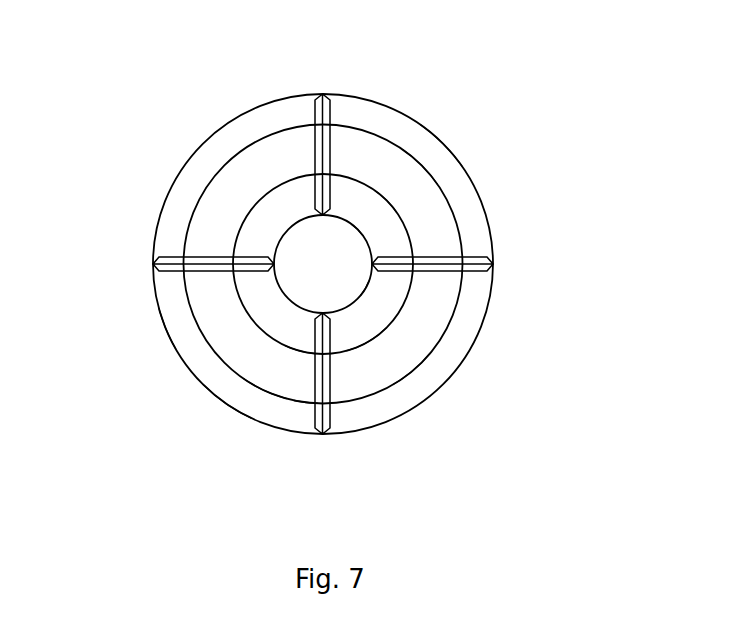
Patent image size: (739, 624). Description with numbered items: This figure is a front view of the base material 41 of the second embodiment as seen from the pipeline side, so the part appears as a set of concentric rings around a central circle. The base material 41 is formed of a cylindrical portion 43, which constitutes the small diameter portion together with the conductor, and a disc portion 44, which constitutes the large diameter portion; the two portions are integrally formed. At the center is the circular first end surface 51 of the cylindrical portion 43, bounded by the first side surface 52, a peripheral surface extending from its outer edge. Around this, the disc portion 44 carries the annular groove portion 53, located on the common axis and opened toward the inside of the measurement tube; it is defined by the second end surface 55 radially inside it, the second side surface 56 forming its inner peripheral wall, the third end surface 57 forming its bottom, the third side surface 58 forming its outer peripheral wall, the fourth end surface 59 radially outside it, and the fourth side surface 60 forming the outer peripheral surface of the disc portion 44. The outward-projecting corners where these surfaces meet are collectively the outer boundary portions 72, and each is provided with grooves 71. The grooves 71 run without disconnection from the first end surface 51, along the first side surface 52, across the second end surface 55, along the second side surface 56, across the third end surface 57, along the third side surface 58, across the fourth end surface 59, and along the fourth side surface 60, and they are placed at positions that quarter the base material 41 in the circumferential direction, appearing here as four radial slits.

The base material 41 is at (158, 181).
The cylindrical portion 43 is at (293, 220).
The disc portion 44 is at (192, 150).
The first end surface 51 is at (345, 286).
The first side surface 52 is at (398, 354).
The annular groove portion 53 is at (450, 373).
The second end surface 55 is at (372, 347).
The second side surface 56 is at (352, 330).
The third end surface 57 is at (299, 372).
The third side surface 58 is at (261, 372).
The fourth end surface 59 is at (212, 377).
The fourth side surface 60 is at (163, 332).
The grooves 71 is at (316, 108).
The outer boundary portions 72 is at (381, 232).